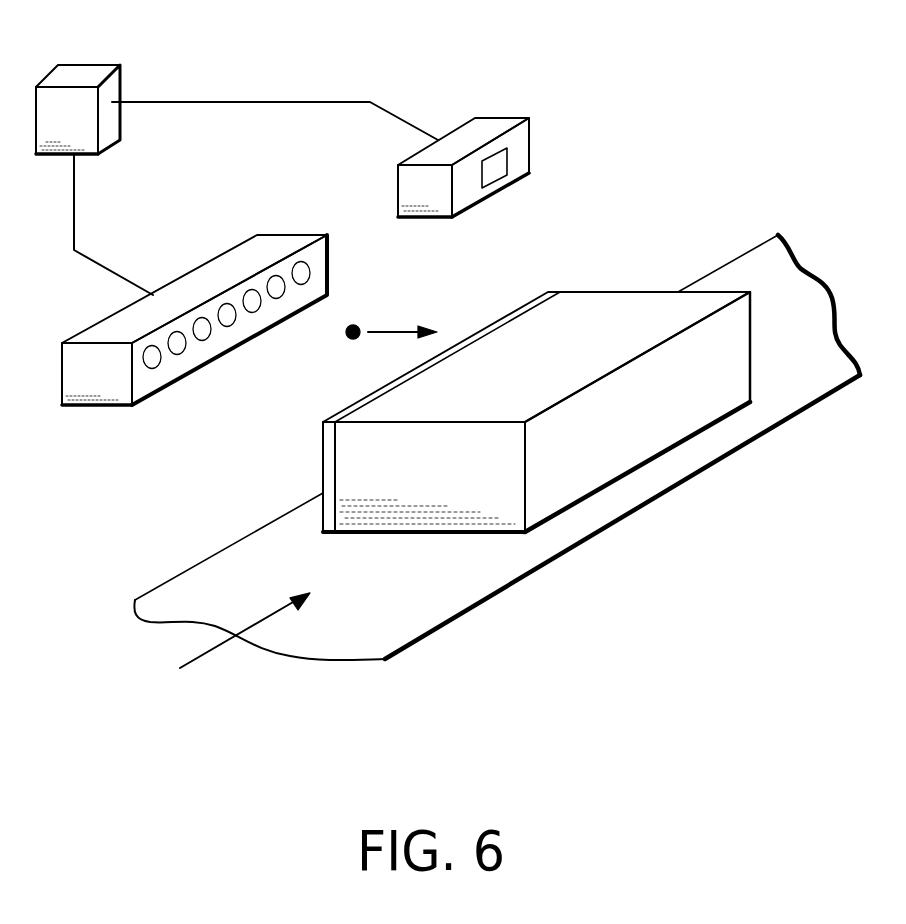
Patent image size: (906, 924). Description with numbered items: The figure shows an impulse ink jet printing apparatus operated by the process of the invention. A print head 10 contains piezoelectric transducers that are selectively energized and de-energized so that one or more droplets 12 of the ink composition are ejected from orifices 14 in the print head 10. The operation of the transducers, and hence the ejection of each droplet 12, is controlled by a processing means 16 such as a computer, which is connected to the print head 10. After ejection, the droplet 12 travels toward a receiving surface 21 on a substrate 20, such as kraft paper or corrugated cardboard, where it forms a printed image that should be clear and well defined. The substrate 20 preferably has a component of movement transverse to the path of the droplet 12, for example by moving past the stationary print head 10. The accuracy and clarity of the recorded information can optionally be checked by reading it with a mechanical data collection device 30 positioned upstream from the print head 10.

The print head 10 is at (178, 366).
The droplet 12 is at (353, 324).
The orifices 14 is at (205, 334).
The processing means 16 is at (82, 77).
The substrate 20 is at (493, 474).
The receiving surface 21 is at (323, 453).
The mechanical data collection device 30 is at (482, 133).